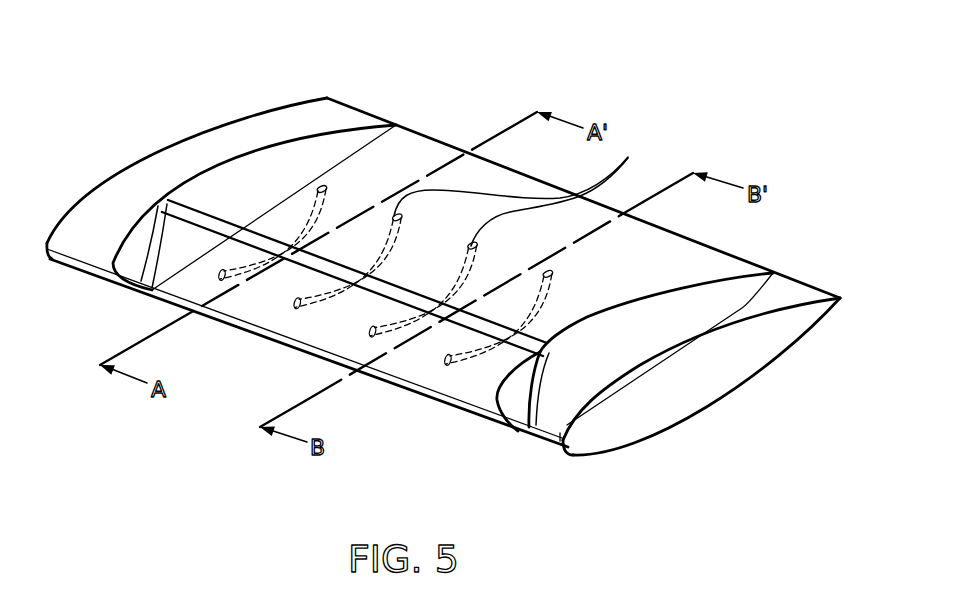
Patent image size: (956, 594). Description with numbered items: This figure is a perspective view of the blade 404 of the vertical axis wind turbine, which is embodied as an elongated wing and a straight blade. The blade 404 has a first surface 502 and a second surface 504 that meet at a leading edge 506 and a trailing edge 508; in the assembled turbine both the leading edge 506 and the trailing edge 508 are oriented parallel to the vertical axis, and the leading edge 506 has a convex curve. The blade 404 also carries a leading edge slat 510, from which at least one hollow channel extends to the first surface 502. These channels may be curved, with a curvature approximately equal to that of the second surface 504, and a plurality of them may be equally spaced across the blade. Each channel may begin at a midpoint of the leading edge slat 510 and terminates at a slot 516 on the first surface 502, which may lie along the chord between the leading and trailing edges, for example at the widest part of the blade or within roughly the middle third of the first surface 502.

The blade 404 is at (180, 65).
The first surface 502 is at (799, 291).
The second surface 504 is at (727, 388).
The leading edge 506 is at (271, 341).
The trailing edge 508 is at (441, 137).
The leading edge slat 510 is at (445, 376).
The slot 516 is at (531, 189).